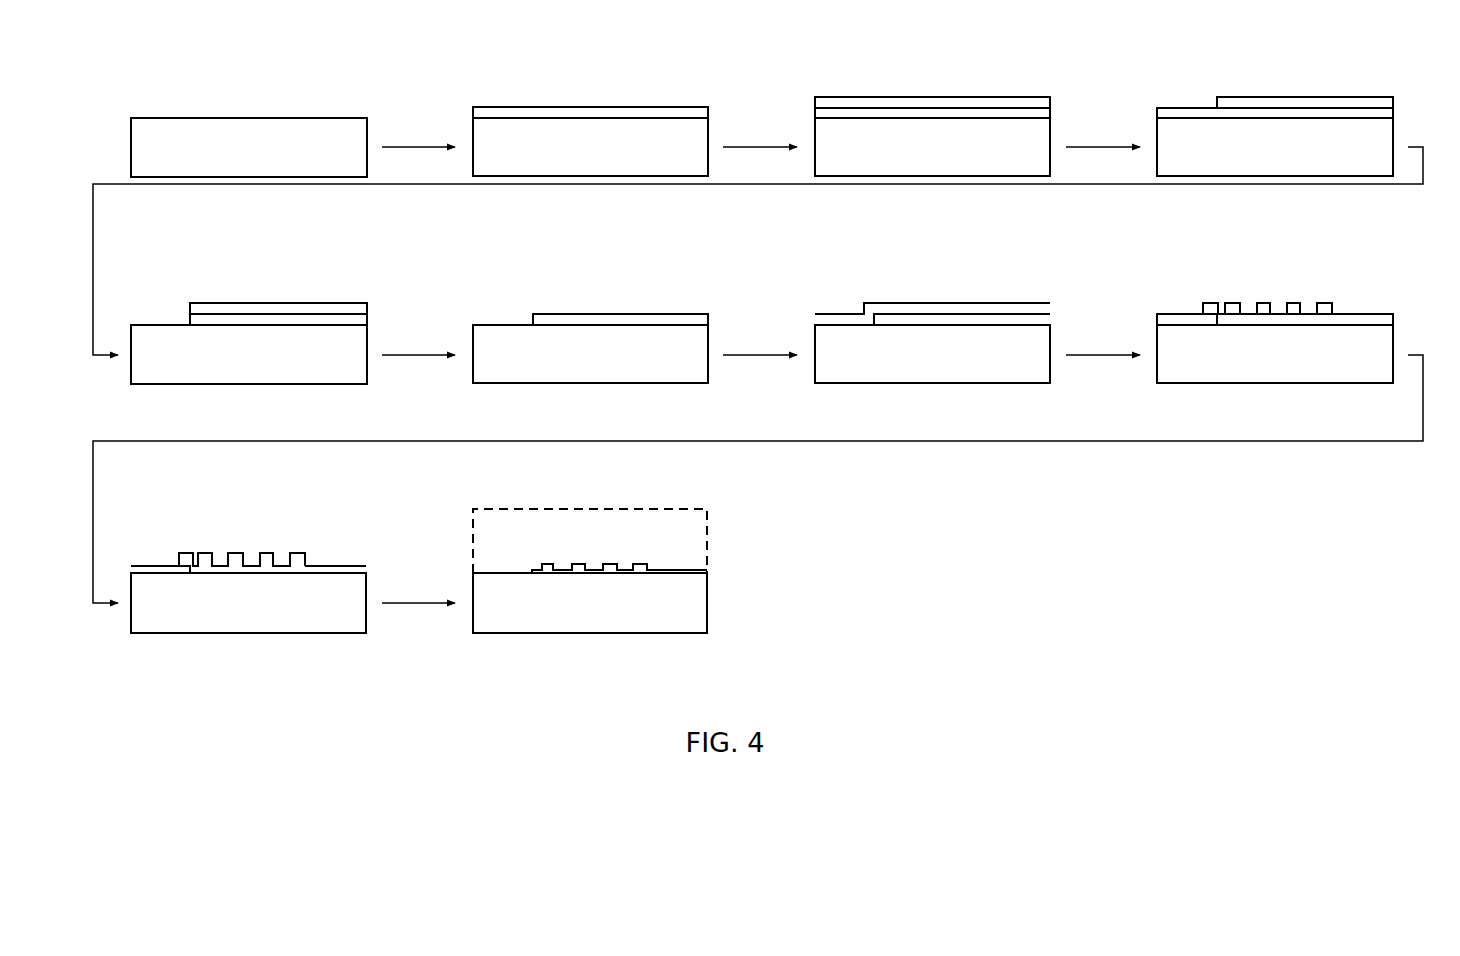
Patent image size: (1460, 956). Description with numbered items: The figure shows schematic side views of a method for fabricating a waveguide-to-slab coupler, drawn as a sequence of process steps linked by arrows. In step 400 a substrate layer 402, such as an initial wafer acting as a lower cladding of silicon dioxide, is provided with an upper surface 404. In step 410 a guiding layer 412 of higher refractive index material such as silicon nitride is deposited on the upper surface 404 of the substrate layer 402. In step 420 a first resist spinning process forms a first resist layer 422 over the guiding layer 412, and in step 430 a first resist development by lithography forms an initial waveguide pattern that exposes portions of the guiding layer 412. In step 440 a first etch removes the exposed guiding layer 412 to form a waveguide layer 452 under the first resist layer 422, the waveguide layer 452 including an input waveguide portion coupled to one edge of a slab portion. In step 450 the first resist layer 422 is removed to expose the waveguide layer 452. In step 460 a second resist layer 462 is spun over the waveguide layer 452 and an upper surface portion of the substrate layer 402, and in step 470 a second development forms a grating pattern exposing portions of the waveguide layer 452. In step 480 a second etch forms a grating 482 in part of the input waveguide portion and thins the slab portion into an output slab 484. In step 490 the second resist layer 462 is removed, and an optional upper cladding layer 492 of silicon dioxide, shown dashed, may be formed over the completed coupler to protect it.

The substrate provision step 400 is at (128, 138).
The substrate layer 402 is at (200, 128).
The upper surface 404 is at (300, 117).
The guiding layer deposition step 410 is at (468, 130).
The guiding layer 412 is at (518, 113).
The first resist spinning step 420 is at (808, 130).
The first resist layer 422 is at (855, 103).
The first resist development step 430 is at (1150, 130).
The first etching step 440 is at (145, 322).
The first resist removal step 450 is at (470, 322).
The waveguide layer 452 is at (222, 320).
The second resist spinning step 460 is at (815, 315).
The second resist layer 462 is at (880, 312).
The second resist development step 470 is at (1148, 325).
The second etching step 480 is at (130, 578).
The grating 482 is at (278, 568).
The output slab 484 is at (343, 568).
The second resist removal step 490 is at (460, 580).
The upper cladding layer 492 is at (693, 509).